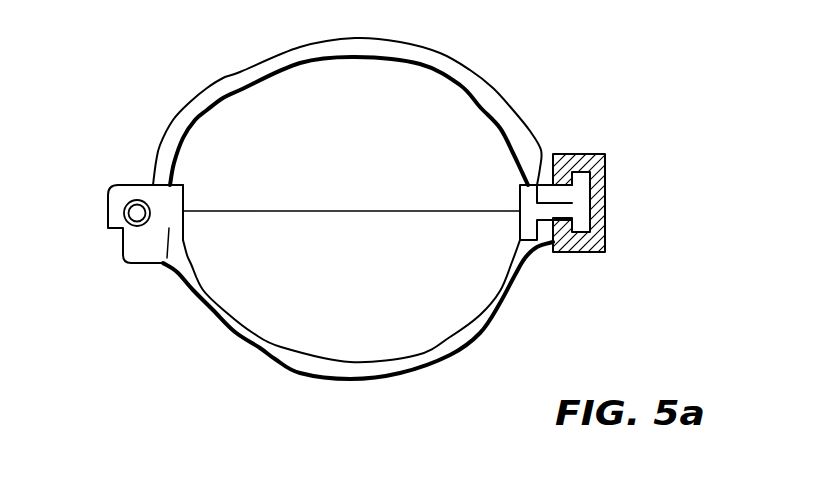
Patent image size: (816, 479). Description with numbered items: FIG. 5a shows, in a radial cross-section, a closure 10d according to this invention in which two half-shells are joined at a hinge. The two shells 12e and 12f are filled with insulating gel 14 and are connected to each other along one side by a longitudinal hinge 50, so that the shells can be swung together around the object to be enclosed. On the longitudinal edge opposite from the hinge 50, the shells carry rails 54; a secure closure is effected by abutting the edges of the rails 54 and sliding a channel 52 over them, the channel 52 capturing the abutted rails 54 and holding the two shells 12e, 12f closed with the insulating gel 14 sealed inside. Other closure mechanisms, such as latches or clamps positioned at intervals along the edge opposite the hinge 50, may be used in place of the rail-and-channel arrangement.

The closure 10d is at (140, 75).
The shell 12e is at (325, 370).
The shell 12f is at (291, 55).
The insulating gel 14 is at (472, 120).
The longitudinal hinge 50 is at (124, 210).
The channel 52 is at (604, 163).
The rails 54 is at (583, 188).